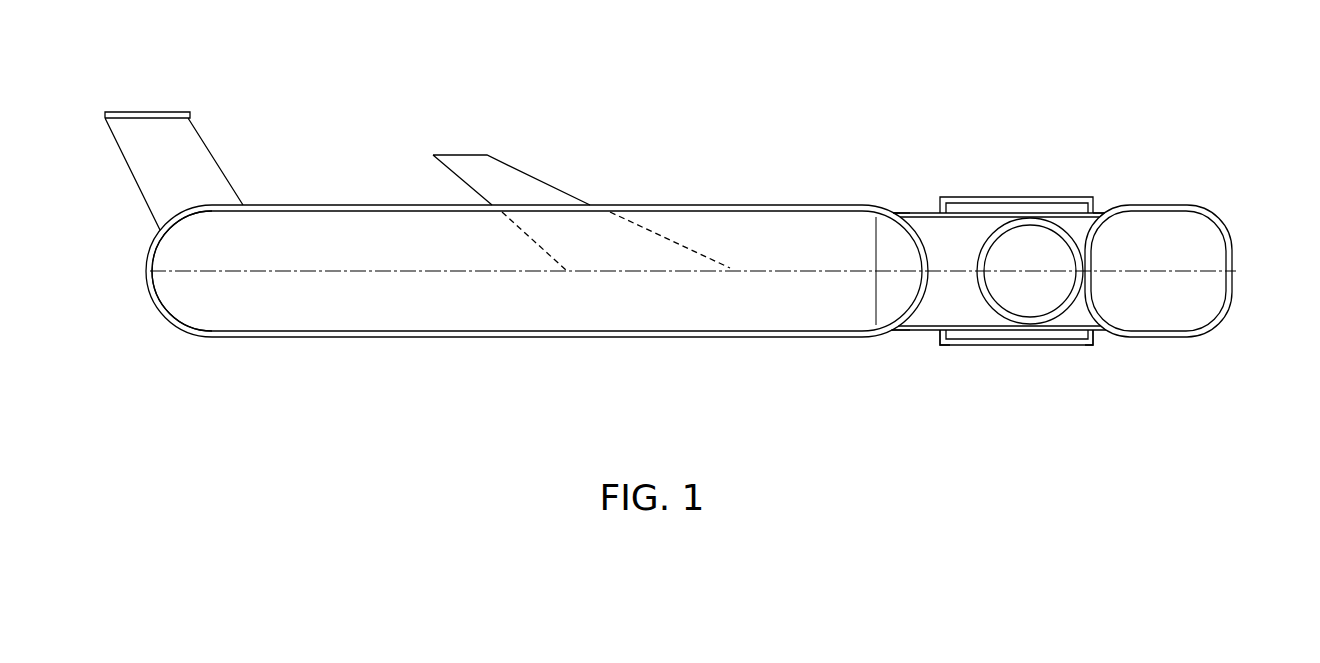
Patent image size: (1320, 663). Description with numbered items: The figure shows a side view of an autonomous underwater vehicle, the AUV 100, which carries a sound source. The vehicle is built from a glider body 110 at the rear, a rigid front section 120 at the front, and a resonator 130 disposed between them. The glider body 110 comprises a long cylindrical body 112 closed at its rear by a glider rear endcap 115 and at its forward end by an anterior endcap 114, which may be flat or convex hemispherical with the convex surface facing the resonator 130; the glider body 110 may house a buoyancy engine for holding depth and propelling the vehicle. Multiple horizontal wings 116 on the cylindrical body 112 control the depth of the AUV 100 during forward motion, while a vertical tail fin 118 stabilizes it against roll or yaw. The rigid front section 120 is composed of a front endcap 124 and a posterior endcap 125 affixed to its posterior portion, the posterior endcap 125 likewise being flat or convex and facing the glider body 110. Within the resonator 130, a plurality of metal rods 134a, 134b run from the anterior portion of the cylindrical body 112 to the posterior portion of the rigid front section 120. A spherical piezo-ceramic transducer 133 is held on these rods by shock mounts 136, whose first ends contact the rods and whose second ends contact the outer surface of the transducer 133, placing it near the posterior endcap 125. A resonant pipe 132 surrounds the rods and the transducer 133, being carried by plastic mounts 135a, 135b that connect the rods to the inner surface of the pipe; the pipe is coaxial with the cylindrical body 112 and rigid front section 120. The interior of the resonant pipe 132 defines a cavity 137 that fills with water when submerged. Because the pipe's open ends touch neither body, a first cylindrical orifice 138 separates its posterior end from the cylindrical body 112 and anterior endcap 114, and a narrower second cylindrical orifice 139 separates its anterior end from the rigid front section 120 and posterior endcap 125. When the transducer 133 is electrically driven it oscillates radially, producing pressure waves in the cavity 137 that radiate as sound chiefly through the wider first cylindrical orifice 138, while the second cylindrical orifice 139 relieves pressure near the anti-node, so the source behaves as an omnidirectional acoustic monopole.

The AUV 100 is at (710, 101).
The glider body 110 is at (701, 354).
The cylindrical body 112 is at (438, 342).
The anterior endcap 114 is at (905, 310).
The glider rear endcap 115 is at (155, 290).
The horizontal wings 116 is at (512, 165).
The vertical tail fin 118 is at (207, 148).
The rigid front section 120 is at (1222, 207).
The front endcap 124 is at (1229, 277).
The posterior endcap 125 is at (1101, 232).
The resonator 130 is at (1019, 169).
The resonant pipe 132 is at (1075, 196).
The spherical piezo-ceramic transducer 133 is at (1015, 221).
The metal rod 134a is at (909, 213).
The metal rod 134b is at (906, 335).
The plastic mount 135a is at (941, 340).
The plastic mount 135b is at (1097, 338).
The shock mount 136 is at (1017, 321).
The cavity 137 is at (947, 235).
The first cylindrical orifice 138 is at (924, 202).
The second cylindrical orifice 139 is at (1107, 207).